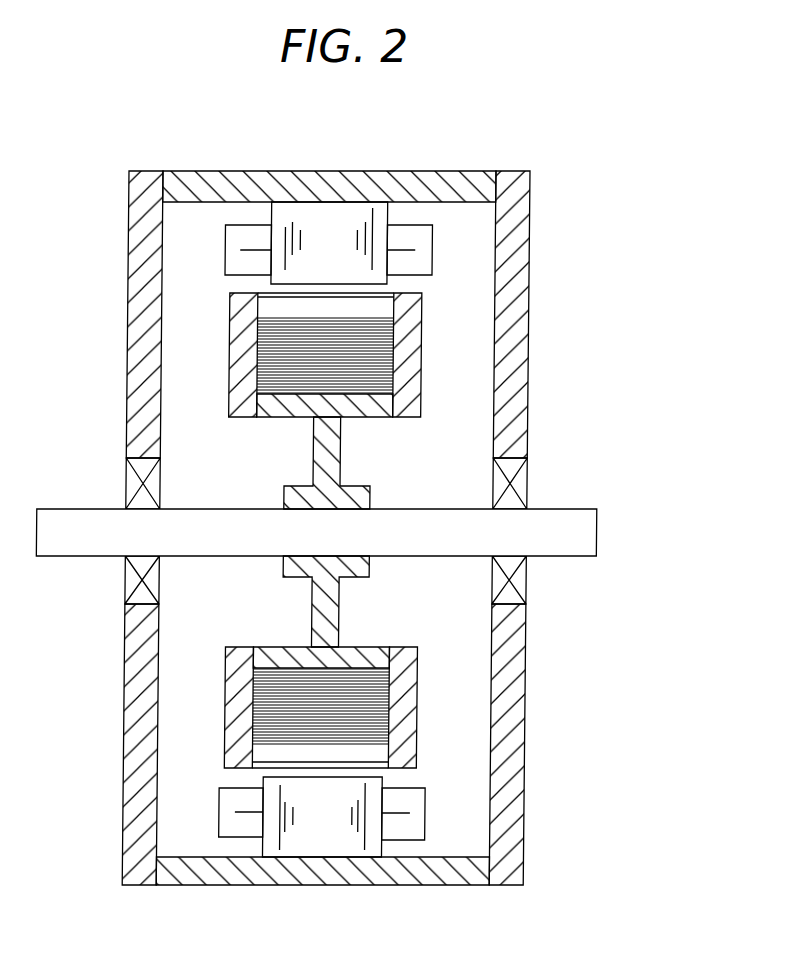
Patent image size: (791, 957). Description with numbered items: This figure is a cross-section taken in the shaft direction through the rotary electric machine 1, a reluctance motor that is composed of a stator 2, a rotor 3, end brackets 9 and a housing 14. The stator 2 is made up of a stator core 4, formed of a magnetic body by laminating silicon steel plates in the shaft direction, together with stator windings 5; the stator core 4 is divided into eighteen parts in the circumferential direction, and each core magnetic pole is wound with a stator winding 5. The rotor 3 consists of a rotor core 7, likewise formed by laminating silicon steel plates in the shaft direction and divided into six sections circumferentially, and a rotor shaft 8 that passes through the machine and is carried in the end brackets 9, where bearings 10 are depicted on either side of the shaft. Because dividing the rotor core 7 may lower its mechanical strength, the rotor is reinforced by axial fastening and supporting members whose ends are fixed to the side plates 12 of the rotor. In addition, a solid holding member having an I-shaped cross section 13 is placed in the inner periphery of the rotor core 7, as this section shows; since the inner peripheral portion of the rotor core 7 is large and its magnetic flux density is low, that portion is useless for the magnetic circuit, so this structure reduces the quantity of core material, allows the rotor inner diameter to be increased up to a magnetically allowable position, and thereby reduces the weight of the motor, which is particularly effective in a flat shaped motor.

The rotary electric machine 1 is at (328, 488).
The stator 2 is at (397, 194).
The rotor 3 is at (183, 355).
The stator core 4 is at (288, 222).
The stator winding 5 is at (418, 247).
The rotor core 7 is at (305, 337).
The rotor shaft 8 is at (583, 517).
The end bracket 9 is at (513, 290).
The bearing 10 is at (517, 463).
The side plate 12 is at (243, 320).
The solid holding member having an I-shaped cross section 13 is at (342, 458).
The housing 14 is at (298, 190).